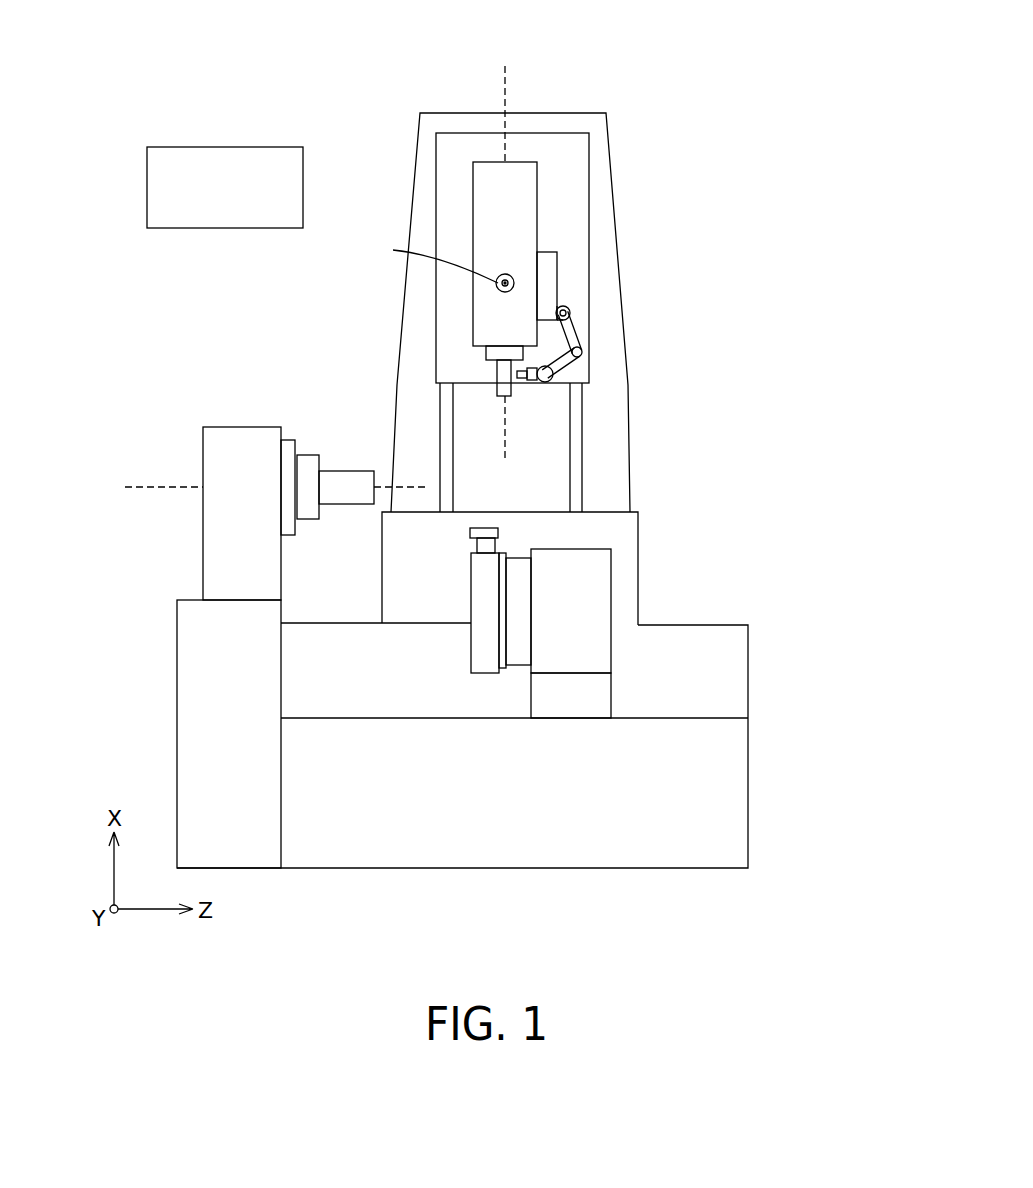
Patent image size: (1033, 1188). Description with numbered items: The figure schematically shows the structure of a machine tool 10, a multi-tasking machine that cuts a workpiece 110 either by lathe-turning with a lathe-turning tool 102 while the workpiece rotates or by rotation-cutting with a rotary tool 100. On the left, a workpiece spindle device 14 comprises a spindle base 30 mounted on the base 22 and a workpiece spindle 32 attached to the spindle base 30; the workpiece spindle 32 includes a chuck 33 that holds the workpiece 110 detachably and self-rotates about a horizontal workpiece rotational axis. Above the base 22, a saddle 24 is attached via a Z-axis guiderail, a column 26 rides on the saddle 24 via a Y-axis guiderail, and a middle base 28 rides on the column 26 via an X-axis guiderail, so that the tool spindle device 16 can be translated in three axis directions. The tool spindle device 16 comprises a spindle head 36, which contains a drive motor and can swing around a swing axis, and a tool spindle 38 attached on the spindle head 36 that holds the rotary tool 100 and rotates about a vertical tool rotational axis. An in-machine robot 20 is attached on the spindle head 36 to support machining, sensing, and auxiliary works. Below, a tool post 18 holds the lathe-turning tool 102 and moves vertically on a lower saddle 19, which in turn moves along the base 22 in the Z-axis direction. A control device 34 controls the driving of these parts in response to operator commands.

The machine tool 10 is at (620, 68).
The workpiece spindle device 14 is at (190, 515).
The tool spindle device 16 is at (550, 225).
The tool post 18 is at (615, 588).
The lower saddle 19 is at (593, 697).
The in-machine robot 20 is at (542, 285).
The base 22 is at (621, 842).
The saddle 24 is at (623, 537).
The column 26 is at (605, 460).
The middle base 28 is at (578, 173).
The spindle base 30 is at (233, 430).
The workpiece spindle 32 is at (290, 445).
The chuck 33 is at (307, 462).
The control device 34 is at (190, 147).
The spindle head 36 is at (488, 175).
The tool spindle 38 is at (513, 353).
The rotary tool 100 is at (508, 378).
The lathe-turning tool 102 is at (473, 520).
The workpiece 110 is at (338, 498).